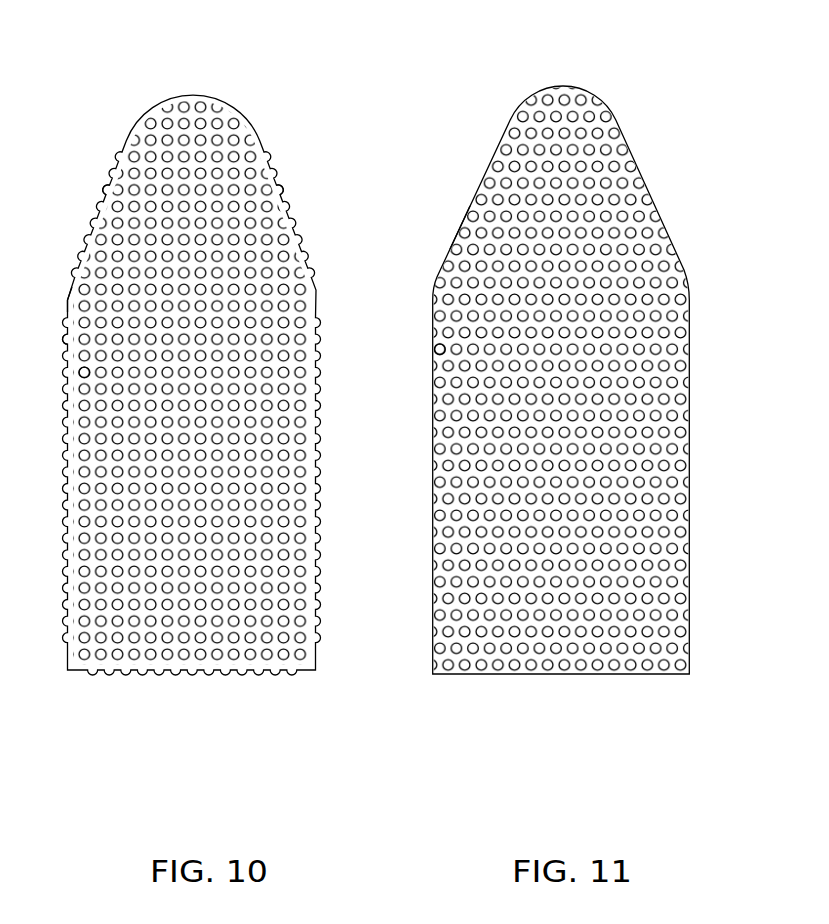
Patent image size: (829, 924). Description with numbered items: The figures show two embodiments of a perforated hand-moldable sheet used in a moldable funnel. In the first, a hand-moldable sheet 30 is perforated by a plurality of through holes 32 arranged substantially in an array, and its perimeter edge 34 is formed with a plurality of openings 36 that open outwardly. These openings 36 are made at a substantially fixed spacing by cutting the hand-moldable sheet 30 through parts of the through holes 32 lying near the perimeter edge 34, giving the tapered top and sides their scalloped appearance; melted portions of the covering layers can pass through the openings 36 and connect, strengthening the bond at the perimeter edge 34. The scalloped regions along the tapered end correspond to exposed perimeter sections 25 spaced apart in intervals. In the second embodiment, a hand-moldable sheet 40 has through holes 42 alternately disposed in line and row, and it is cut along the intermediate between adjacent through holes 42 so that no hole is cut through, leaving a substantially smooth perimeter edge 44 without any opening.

In FIG. 10, the exposed perimeter sections 25 is at (178, 93).
In FIG. 10, the hand-moldable sheet 30 is at (258, 118).
In FIG. 10, the through holes 32 is at (79, 371).
In FIG. 10, the perimeter edge 34 is at (68, 312).
In FIG. 10, the openings 36 is at (66, 337).
In FIG. 11, the hand-moldable sheet 40 is at (657, 163).
In FIG. 11, the through holes 42 is at (435, 346).
In FIG. 11, the perimeter edge 44 is at (453, 233).